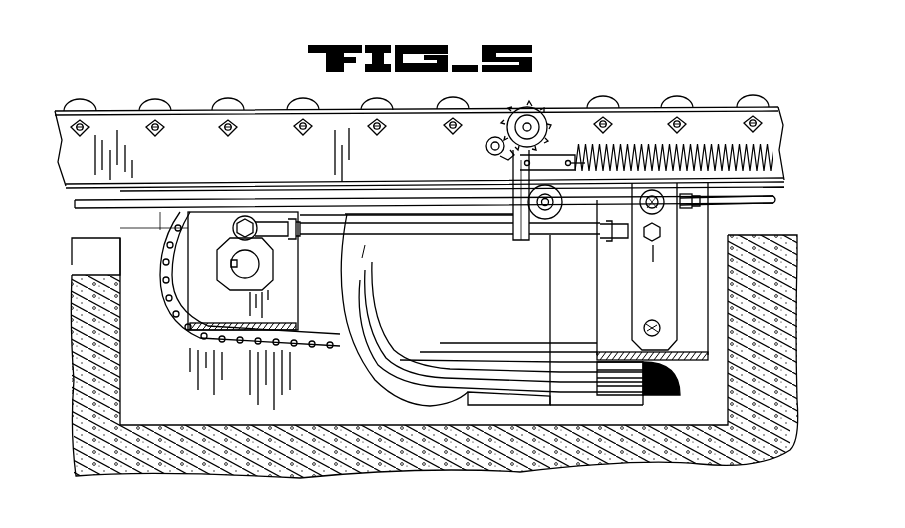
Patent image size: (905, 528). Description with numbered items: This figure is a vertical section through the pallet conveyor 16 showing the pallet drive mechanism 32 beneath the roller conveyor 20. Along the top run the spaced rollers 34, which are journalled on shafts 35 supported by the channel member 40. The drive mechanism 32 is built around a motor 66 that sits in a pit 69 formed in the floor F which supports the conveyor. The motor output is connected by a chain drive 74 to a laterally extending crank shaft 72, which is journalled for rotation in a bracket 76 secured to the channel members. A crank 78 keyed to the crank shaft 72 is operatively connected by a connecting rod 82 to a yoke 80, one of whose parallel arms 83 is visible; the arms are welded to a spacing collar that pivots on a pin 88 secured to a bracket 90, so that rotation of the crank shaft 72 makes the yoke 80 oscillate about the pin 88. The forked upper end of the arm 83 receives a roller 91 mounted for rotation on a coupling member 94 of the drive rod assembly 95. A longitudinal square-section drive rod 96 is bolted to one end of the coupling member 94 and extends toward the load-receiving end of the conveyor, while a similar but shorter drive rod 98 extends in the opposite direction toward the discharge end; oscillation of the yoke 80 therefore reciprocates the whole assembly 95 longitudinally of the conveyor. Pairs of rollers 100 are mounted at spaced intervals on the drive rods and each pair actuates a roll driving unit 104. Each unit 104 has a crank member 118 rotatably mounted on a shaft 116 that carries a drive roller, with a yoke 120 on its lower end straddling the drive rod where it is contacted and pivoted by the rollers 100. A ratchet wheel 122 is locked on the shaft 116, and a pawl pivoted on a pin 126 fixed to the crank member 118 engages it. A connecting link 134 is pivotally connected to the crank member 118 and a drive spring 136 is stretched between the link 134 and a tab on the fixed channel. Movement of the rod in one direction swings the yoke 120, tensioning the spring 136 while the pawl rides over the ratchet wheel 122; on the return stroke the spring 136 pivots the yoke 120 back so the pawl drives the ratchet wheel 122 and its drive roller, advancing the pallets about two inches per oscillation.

The pallet conveyor 16 is at (612, 78).
The roller conveyor 20 is at (258, 111).
The pallet drive mechanism 32 is at (159, 218).
The rollers 34 is at (226, 104).
The shafts 35 is at (225, 130).
The channel member 40 is at (267, 158).
The motor 66 is at (457, 312).
The pit 69 is at (164, 422).
The crank shaft 72 is at (240, 268).
The chain drive 74 is at (248, 350).
The bracket 76 is at (200, 278).
The crank 78 is at (236, 243).
The yoke 80 is at (666, 305).
The connecting rod 82 is at (410, 230).
The arm 83 is at (648, 255).
The pin 88 is at (660, 324).
The bracket 90 is at (610, 326).
The roller 91 is at (688, 208).
The coupling member 94 is at (700, 203).
The drive rod assembly 95 is at (377, 215).
The drive rod 96 is at (775, 200).
The drive rod 98 is at (262, 197).
The rollers 100 is at (550, 215).
The roll driving unit 104 is at (503, 119).
The shaft 116 is at (533, 127).
The crank member 118 is at (487, 145).
The yoke 120 is at (520, 205).
The ratchet wheel 122 is at (538, 110).
The pin 126 is at (493, 153).
The connecting link 134 is at (548, 158).
The drive spring 136 is at (676, 148).
The floor F is at (80, 240).